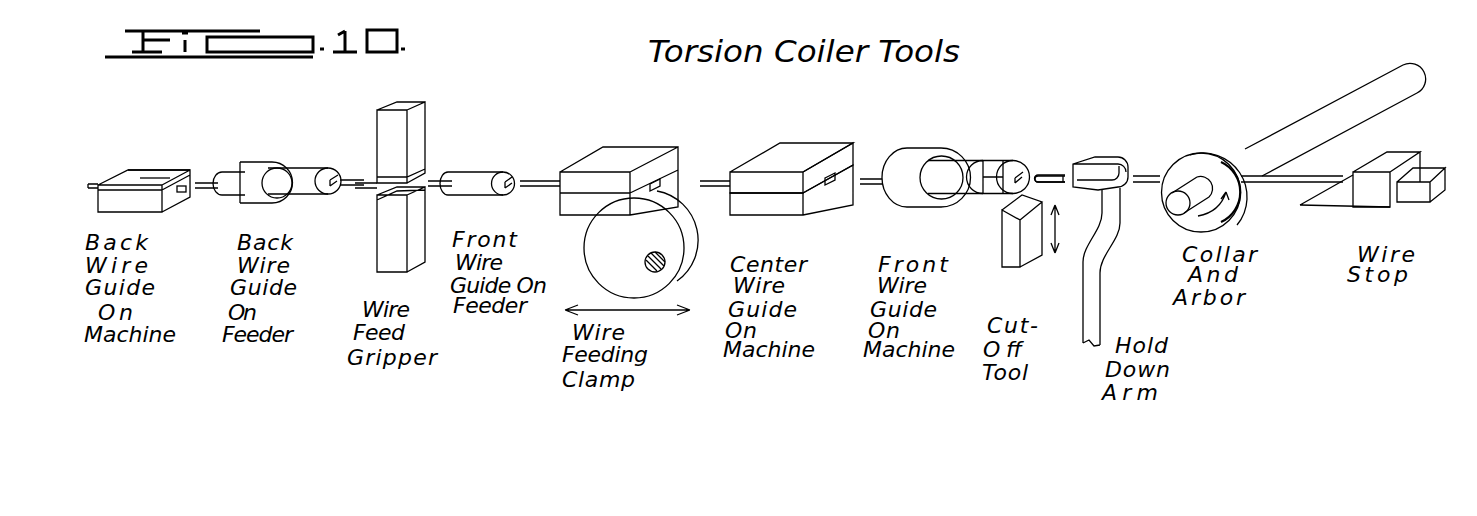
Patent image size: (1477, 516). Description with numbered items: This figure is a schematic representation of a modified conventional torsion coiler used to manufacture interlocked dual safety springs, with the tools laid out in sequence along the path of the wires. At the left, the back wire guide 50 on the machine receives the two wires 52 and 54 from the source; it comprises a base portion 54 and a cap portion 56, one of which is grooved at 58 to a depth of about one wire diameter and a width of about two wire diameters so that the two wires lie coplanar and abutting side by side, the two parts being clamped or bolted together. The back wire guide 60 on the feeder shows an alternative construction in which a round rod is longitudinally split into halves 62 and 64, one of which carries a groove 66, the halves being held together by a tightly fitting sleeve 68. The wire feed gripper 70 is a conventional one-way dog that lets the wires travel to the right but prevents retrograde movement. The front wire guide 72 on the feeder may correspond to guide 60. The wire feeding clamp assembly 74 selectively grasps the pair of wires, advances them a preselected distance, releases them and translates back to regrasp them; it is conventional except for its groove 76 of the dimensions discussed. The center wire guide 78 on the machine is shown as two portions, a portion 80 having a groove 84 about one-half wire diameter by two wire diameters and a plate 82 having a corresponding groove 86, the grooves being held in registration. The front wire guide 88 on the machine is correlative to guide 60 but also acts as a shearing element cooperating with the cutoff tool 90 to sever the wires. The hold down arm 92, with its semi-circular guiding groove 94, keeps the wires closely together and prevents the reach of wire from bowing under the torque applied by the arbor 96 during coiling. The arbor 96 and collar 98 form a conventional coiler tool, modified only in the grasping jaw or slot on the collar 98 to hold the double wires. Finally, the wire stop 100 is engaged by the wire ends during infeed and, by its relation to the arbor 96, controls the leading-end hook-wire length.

The back wire guide 50 is at (173, 159).
The wire 52 is at (88, 187).
The base portion 54 is at (165, 180).
The cap portion 56 is at (158, 180).
The groove 58 is at (188, 188).
The back wire guide 60 is at (294, 165).
The half 62 is at (346, 181).
The half 64 is at (293, 176).
The groove 66 is at (330, 181).
The sleeve 68 is at (254, 165).
The wire feed gripper 70 is at (439, 135).
The front wire guide 72 is at (481, 165).
The wire feeding clamp assembly 74 is at (629, 204).
The groove 76 is at (655, 184).
The center wire guide 78 is at (797, 161).
The portion 80 is at (830, 197).
The plate 82 is at (775, 150).
The groove 84 is at (829, 178).
The groove 86 is at (848, 162).
The front wire guide 88 is at (947, 142).
The cutoff tool 90 is at (1007, 227).
The hold down arm 92 is at (1107, 216).
The guiding groove 94 is at (1108, 178).
The arbor 96 is at (1285, 135).
The collar 98 is at (1224, 150).
The wire stop 100 is at (1425, 147).